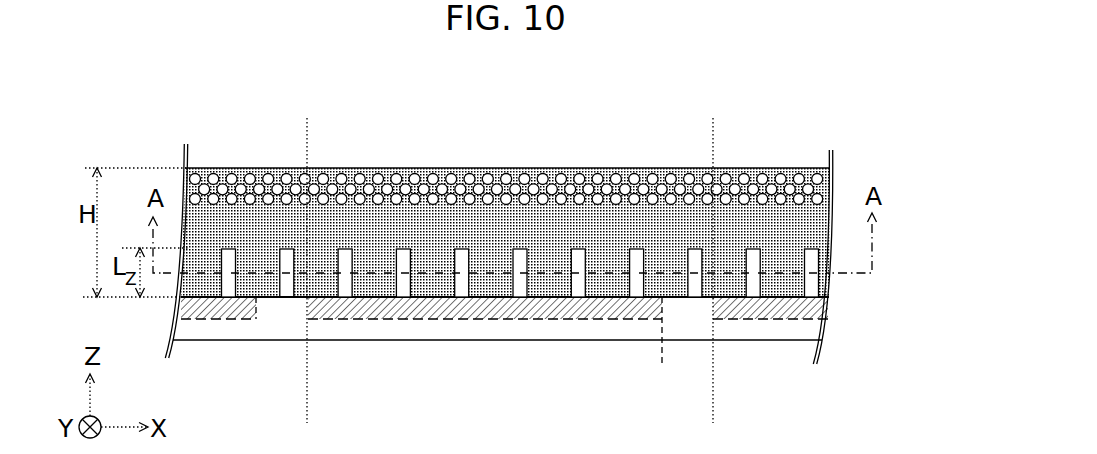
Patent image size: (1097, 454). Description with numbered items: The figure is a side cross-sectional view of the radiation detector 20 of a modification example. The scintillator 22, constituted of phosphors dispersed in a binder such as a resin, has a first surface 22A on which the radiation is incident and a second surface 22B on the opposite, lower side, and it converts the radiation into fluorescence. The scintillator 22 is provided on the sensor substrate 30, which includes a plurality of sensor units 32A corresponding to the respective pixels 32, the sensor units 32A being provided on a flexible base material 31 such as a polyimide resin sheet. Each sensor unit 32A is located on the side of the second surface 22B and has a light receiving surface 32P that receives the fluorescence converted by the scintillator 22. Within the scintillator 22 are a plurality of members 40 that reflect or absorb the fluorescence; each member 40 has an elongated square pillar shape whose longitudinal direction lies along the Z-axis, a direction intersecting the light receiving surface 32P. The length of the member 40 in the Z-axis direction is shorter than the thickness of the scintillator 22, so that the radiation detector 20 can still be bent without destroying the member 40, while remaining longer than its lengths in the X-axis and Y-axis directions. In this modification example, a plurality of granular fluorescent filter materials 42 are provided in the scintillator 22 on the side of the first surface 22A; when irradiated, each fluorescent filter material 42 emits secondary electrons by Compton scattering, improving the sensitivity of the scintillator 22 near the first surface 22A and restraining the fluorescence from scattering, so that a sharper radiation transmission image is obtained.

The radiation detector 20 is at (651, 99).
The scintillator 22 is at (770, 222).
The first surface 22A is at (273, 165).
The second surface 22B is at (268, 300).
The member 40 is at (522, 262).
The fluorescent filter material 42 is at (581, 176).
The sensor substrate 30 is at (900, 290).
The base material 31 is at (820, 330).
The pixel 32 is at (307, 393).
The sensor unit 32A is at (818, 302).
The light receiving surface 32P is at (432, 292).